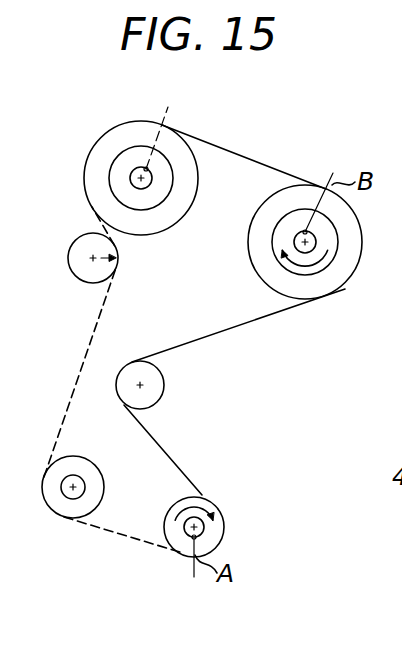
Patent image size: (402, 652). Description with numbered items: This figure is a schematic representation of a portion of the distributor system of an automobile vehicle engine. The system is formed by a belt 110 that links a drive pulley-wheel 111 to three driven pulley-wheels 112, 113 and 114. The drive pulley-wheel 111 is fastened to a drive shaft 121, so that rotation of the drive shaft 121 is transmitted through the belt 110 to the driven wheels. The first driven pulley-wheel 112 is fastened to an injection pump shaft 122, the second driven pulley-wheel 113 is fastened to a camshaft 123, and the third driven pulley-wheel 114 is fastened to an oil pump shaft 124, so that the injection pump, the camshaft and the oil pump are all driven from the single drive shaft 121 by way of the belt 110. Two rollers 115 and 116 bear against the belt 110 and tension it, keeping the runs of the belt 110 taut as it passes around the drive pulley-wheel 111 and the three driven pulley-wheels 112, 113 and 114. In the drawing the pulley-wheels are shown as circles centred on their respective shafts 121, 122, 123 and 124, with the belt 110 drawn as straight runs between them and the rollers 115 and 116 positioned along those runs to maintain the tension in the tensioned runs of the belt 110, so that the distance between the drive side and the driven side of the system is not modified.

The belt 110 is at (238, 331).
The drive pulley-wheel 111 is at (226, 516).
The driven pulley-wheel 112 is at (256, 283).
The driven pulley-wheel 113 is at (94, 142).
The driven pulley-wheel 114 is at (95, 459).
The roller 115 is at (158, 386).
The roller 116 is at (80, 247).
The drive shaft 121 is at (186, 521).
The injection pump shaft 122 is at (298, 238).
The camshaft 123 is at (132, 171).
The oil pump shaft 124 is at (71, 499).